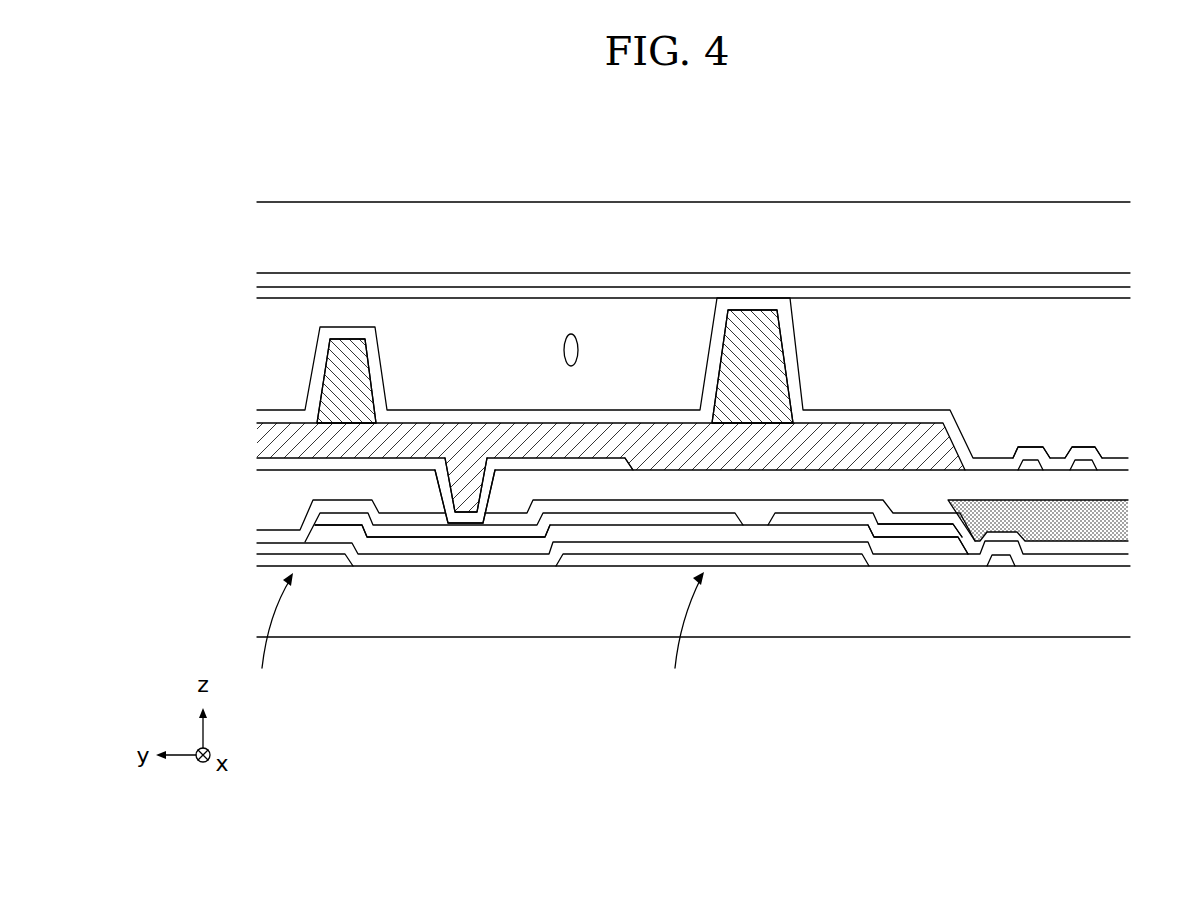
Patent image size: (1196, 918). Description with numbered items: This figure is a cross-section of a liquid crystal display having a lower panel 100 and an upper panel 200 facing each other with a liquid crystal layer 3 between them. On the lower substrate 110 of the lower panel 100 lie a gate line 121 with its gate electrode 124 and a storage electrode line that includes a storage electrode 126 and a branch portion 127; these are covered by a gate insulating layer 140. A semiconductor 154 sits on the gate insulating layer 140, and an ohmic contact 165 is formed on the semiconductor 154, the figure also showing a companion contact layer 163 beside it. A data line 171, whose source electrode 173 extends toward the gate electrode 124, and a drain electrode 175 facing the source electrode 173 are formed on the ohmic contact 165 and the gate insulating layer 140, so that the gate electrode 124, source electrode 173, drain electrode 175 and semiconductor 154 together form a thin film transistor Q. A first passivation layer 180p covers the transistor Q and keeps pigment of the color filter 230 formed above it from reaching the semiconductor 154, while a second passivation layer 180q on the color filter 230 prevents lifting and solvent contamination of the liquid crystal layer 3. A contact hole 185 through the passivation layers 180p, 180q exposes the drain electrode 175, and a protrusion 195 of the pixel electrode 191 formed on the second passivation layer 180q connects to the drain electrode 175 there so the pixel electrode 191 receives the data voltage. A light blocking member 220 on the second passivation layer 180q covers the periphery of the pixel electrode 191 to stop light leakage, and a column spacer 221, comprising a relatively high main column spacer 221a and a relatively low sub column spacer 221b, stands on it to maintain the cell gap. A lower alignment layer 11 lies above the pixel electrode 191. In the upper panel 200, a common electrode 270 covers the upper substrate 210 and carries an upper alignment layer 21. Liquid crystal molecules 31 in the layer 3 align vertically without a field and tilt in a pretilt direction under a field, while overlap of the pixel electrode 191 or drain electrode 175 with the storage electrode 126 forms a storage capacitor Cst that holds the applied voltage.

The liquid crystal layer 3 is at (1143, 302).
The lower alignment layer 11 is at (991, 462).
The upper alignment layer 21 is at (715, 295).
The liquid crystal molecule 31 is at (579, 350).
The lower panel 100 is at (1143, 462).
The lower substrate 110 is at (918, 605).
The gate line 121 is at (597, 560).
The gate electrode 124 is at (737, 558).
The storage electrode 126 is at (318, 558).
The branch portion 127 is at (1002, 556).
The gate insulating layer 140 is at (431, 560).
The semiconductor 154 is at (792, 537).
The ohmic contact 163 is at (850, 527).
The ohmic contact 165 is at (498, 538).
The data line 171 is at (909, 527).
The source electrode 173 is at (839, 520).
The drain electrode 175 is at (662, 518).
The first passivation layer 180p is at (1058, 546).
The second passivation layer 180q is at (1085, 488).
The contact hole 185 is at (450, 488).
The pixel electrode 191 is at (1028, 460).
The protrusion 195 is at (530, 463).
The upper panel 200 is at (1143, 202).
The upper substrate 210 is at (529, 222).
The light blocking member 220 is at (419, 440).
The column spacer 221 is at (893, 172).
The main column spacer 221a is at (758, 347).
The sub column spacer 221b is at (340, 370).
The color filter 230 is at (1103, 525).
The common electrode 270 is at (612, 282).
The storage capacitor Cst is at (266, 635).
The thin film transistor Q is at (681, 635).